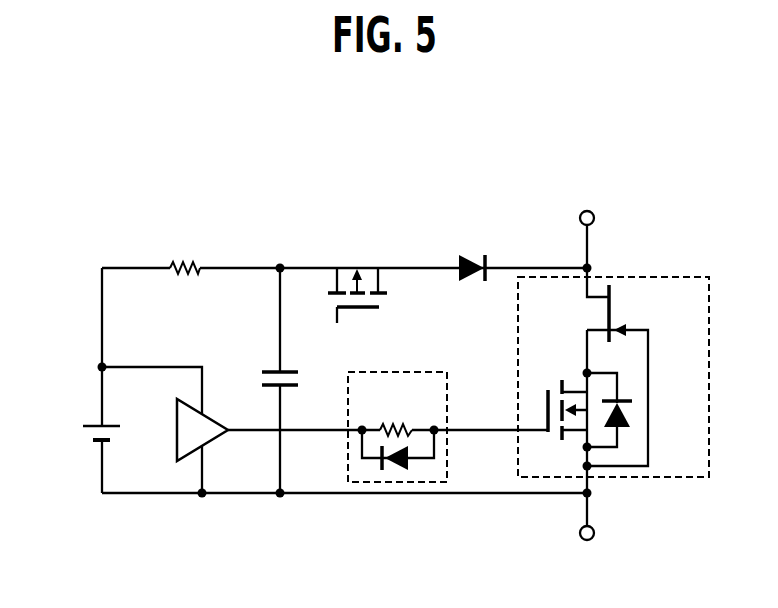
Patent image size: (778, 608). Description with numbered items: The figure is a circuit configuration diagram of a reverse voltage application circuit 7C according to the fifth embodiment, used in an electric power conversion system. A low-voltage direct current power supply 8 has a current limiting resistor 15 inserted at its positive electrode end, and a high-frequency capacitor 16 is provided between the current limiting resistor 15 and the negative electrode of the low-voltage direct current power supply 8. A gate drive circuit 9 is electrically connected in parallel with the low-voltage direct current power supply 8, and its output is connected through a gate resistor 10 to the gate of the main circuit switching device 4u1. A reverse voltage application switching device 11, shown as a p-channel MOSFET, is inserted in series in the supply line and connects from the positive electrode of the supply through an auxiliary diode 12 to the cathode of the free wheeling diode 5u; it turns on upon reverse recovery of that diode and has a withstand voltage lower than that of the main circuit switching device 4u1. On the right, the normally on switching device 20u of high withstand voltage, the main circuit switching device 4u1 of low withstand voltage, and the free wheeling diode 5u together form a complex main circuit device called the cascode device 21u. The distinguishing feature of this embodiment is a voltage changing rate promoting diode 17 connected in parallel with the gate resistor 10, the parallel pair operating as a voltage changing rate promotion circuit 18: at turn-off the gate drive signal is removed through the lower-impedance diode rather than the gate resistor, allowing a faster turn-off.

The reverse voltage application circuit 7C is at (625, 169).
The low-voltage direct current power supply 8 is at (90, 425).
The gate drive circuit 9 is at (185, 462).
The gate resistor 10 is at (400, 422).
The reverse voltage application switching device 11 is at (355, 262).
The auxiliary diode 12 is at (473, 262).
The current limiting resistor 15 is at (187, 262).
The high-frequency capacitor 16 is at (274, 368).
The voltage changing rate promoting diode 17 is at (403, 472).
The voltage changing rate promotion circuit 18 is at (417, 368).
The normally on switching device 20u is at (611, 300).
The cascode device 21u is at (640, 277).
The main circuit switching device 4u1 is at (552, 388).
The free wheeling diode 5u is at (620, 400).